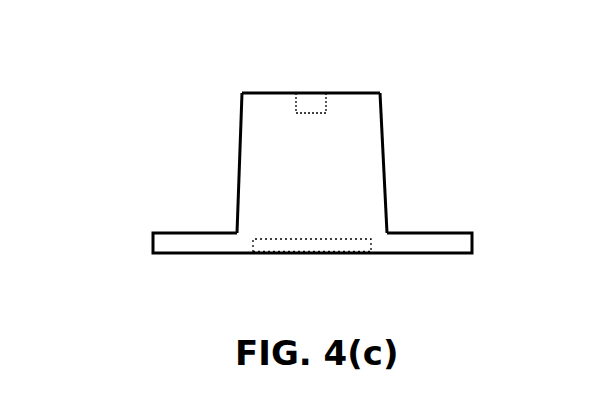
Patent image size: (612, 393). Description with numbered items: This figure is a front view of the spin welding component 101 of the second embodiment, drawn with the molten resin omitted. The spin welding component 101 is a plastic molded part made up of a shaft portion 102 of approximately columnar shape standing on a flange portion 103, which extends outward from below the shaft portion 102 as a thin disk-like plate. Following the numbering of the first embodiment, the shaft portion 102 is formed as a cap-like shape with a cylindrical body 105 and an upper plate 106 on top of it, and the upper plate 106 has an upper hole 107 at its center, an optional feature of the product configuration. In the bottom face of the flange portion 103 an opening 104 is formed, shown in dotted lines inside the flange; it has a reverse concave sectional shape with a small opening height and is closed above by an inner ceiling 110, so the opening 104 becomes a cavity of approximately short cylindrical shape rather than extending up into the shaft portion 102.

The spin welding component 101 is at (113, 92).
The shaft portion 102 is at (238, 150).
The flange portion 103 is at (433, 247).
The opening 104 is at (288, 245).
The cylindrical body 105 is at (375, 163).
The upper plate 106 is at (353, 92).
The upper hole 107 is at (312, 105).
The inner ceiling 110 is at (340, 240).